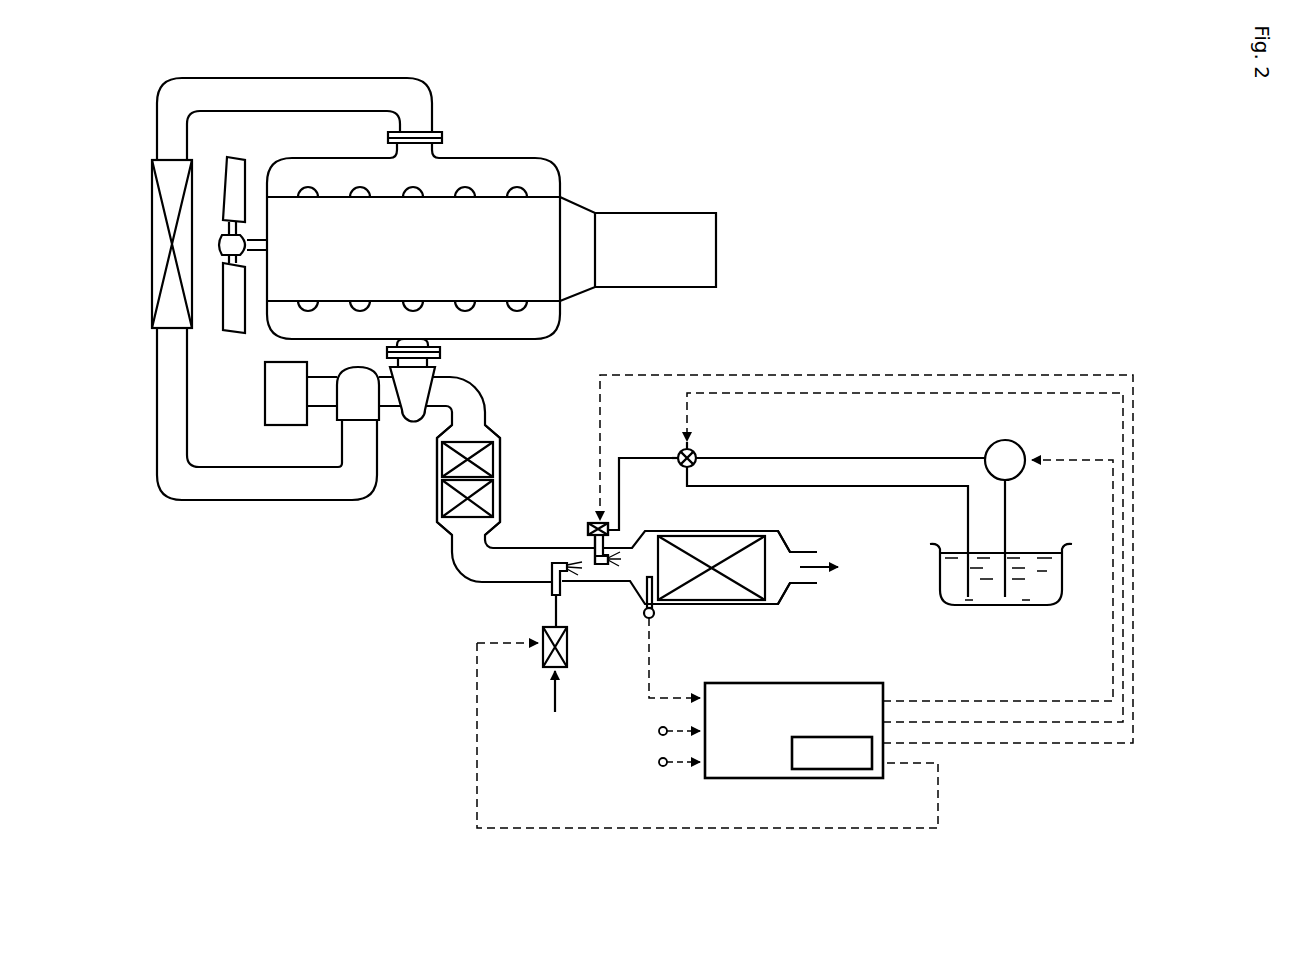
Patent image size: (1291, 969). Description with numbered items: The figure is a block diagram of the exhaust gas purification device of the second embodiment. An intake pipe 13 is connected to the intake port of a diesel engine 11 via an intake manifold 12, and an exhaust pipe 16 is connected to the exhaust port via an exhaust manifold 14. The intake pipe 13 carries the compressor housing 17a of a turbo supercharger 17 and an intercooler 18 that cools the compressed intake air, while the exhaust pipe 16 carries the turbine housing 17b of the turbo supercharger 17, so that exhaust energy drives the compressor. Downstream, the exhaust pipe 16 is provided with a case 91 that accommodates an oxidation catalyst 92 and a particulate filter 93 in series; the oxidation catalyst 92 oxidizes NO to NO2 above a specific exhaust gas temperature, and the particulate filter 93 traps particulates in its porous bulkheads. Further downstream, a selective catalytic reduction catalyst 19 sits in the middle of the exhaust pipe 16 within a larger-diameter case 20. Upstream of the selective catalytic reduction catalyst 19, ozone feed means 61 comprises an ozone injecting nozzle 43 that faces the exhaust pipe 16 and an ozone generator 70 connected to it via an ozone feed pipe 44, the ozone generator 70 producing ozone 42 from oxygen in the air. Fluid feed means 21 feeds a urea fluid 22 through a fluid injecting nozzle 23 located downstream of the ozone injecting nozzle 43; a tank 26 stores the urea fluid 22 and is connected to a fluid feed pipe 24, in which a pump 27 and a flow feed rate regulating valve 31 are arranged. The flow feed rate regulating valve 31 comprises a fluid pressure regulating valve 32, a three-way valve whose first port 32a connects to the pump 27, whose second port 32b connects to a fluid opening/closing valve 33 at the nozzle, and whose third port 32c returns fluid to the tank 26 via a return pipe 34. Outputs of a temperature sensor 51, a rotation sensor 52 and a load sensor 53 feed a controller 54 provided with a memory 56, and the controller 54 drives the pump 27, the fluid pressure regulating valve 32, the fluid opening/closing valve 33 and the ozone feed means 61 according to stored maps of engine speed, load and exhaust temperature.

The diesel engine 11 is at (428, 259).
The intake manifold 12 is at (347, 157).
The intake pipe 13 is at (298, 77).
The exhaust manifold 14 is at (560, 322).
The exhaust pipe 16 is at (470, 380).
The turbo supercharger 17 is at (375, 457).
The compressor housing 17a is at (358, 410).
The turbine housing 17b is at (412, 407).
The intercooler 18 is at (150, 243).
The selective catalytic reduction catalyst 19 is at (698, 543).
The catalyst housing 20 is at (768, 531).
The fluid feed means 21 is at (1013, 630).
The urea fluid 22 is at (605, 548).
The fluid injecting nozzle 23 is at (602, 565).
The fluid feed pipe 24 is at (822, 457).
The tank 26 is at (940, 580).
The pump 27 is at (1022, 477).
The flow feed rate regulating valve 31 is at (587, 500).
The fluid pressure regulating valve 32 is at (677, 442).
The first port 32a is at (697, 451).
The second port 32b is at (680, 452).
The third port 32c is at (682, 466).
The fluid opening/closing valve 33 is at (588, 528).
The return pipe 34 is at (822, 487).
The ozone 42 is at (570, 574).
The ozone injecting nozzle 43 is at (550, 574).
The ozone feed pipe 44 is at (555, 608).
The temperature sensor 51 is at (654, 612).
The rotation sensor 52 is at (659, 731).
The load sensor 53 is at (659, 762).
The controller 54 is at (740, 779).
The memory 56 is at (825, 770).
The ozone feed means 61 is at (517, 673).
The ozone generator 70 is at (572, 652).
The case 91 is at (500, 447).
The oxidation catalyst 92 is at (495, 458).
The particulate filter 93 is at (495, 497).